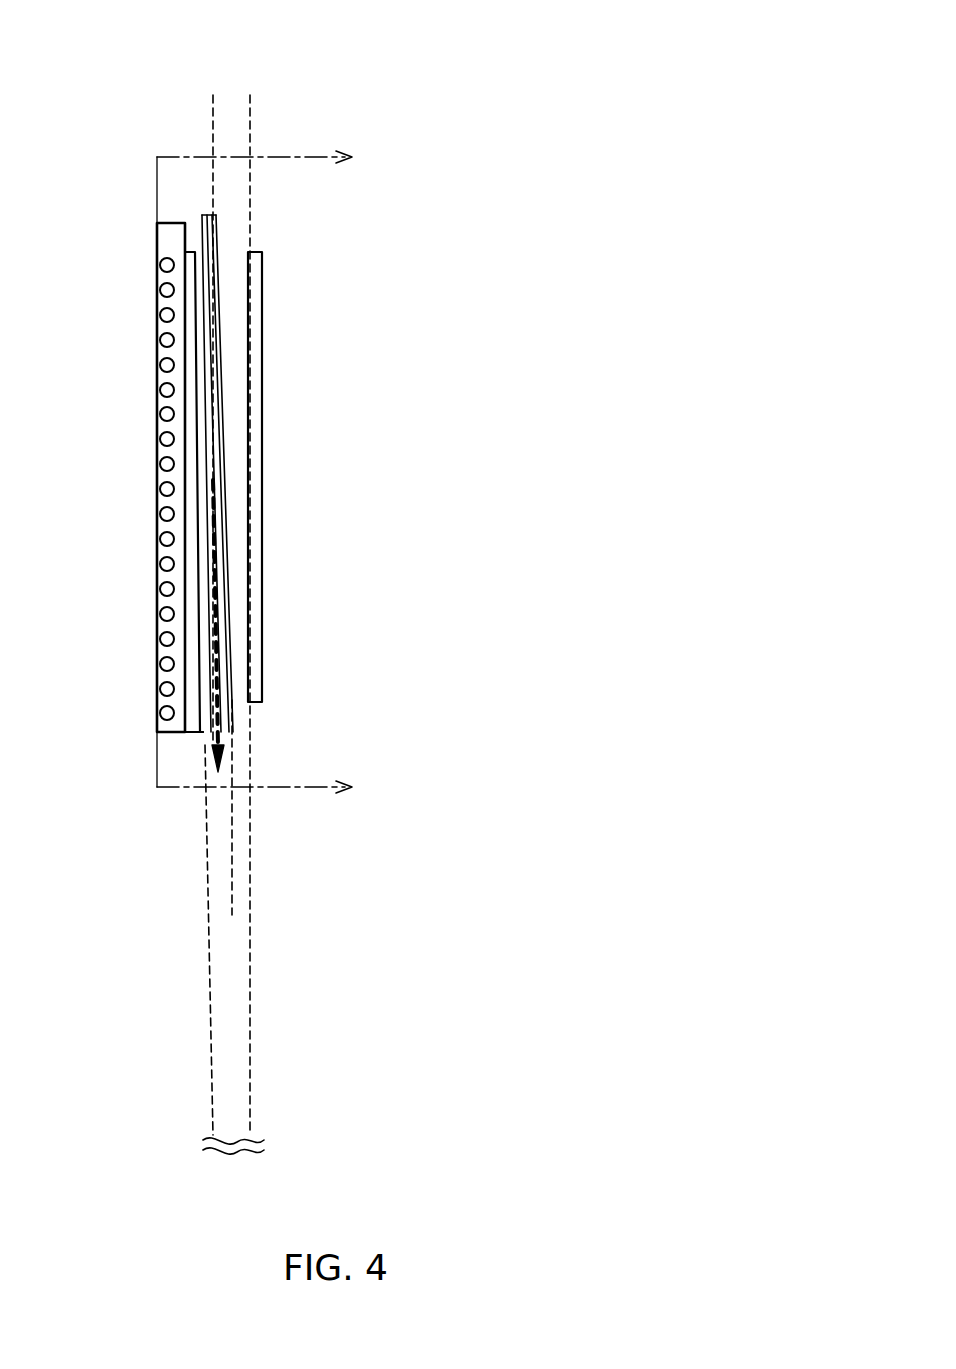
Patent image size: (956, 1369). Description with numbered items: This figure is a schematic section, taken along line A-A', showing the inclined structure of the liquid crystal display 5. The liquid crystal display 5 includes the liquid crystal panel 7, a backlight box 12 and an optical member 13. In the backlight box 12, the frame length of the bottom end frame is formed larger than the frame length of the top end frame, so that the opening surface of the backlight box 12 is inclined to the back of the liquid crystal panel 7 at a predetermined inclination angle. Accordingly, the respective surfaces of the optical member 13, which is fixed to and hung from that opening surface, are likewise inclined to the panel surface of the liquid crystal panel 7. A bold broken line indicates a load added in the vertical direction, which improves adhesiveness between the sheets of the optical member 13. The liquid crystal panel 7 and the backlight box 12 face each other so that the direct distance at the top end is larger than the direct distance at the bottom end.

The liquid crystal display 5 is at (389, 25).
The liquid crystal panel 7 is at (262, 256).
The backlight box 12 is at (198, 722).
The optical member 13 is at (185, 215).